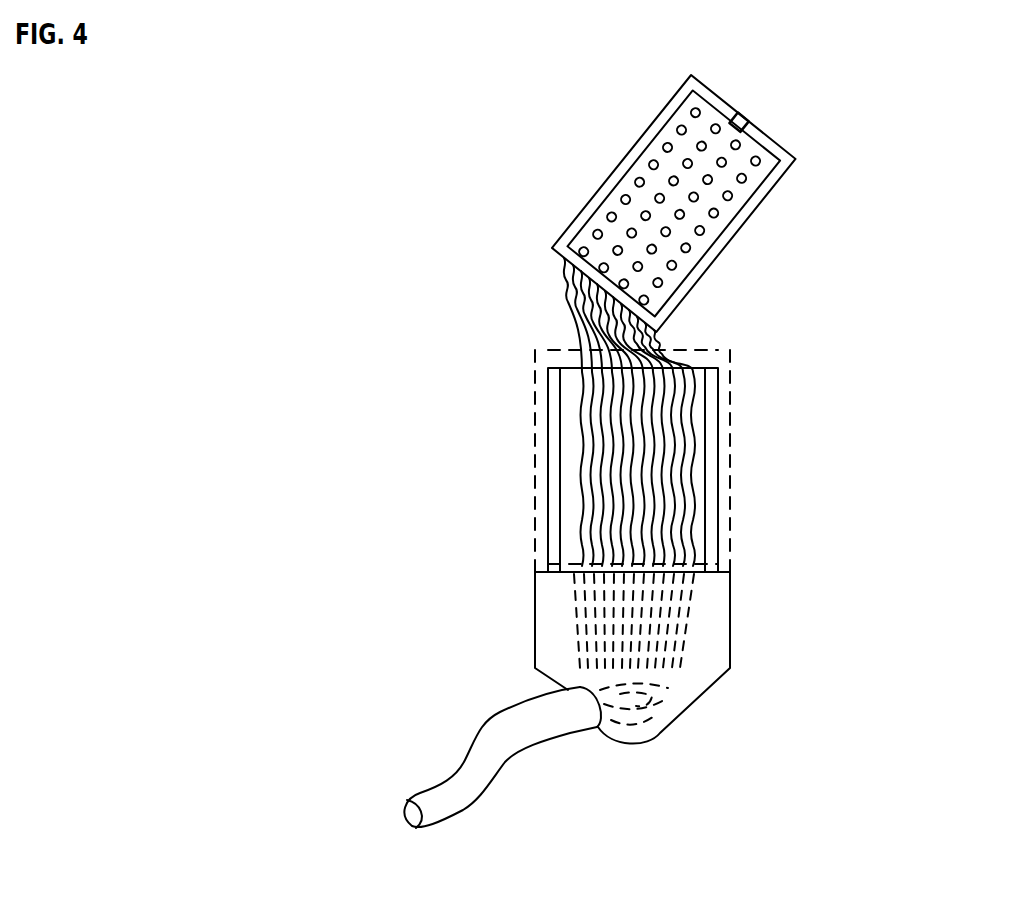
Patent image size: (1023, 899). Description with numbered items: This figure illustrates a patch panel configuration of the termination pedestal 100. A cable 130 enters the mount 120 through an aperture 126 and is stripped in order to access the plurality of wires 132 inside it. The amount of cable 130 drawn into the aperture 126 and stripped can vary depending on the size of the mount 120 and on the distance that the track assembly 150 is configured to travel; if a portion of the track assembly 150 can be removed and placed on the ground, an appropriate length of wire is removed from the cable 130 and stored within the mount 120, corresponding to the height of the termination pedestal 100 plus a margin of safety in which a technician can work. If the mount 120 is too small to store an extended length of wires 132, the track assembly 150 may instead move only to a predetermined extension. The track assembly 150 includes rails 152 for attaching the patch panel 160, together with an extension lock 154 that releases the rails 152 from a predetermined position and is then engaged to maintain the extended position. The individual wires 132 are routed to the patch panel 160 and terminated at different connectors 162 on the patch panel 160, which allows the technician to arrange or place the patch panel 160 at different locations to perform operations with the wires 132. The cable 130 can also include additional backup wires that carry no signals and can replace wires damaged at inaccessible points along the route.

The termination pedestal 100 is at (994, 76).
The mount 120 is at (728, 625).
The aperture 126 is at (572, 682).
The cable 130 is at (505, 777).
The wires 132 is at (543, 277).
The track assembly 150 is at (572, 116).
The rails 152 is at (673, 203).
The extension lock 154 is at (738, 122).
The patch panel 160 is at (669, 206).
The connectors 162 is at (720, 204).